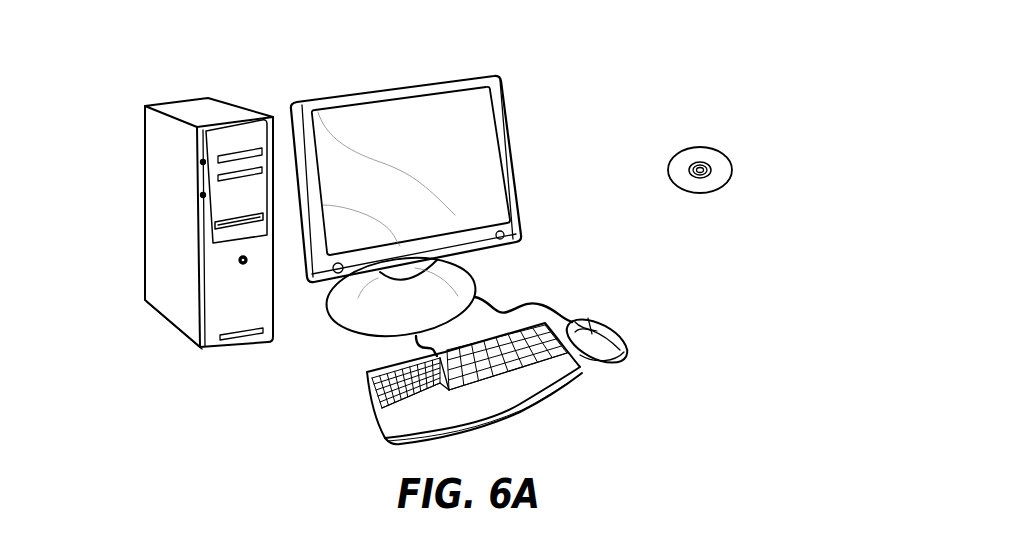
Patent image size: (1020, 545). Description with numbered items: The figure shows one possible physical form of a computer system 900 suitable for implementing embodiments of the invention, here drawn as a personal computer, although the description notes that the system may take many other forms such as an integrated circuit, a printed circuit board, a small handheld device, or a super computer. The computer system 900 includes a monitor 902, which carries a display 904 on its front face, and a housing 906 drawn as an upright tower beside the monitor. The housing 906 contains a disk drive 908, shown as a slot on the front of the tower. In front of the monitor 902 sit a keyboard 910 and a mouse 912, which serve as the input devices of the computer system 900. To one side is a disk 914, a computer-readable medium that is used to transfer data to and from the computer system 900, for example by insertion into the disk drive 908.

The computer system 900 is at (630, 58).
The monitor 902 is at (517, 177).
The display 904 is at (472, 117).
The housing 906 is at (195, 107).
The disk drive 908 is at (252, 218).
The keyboard 910 is at (372, 413).
The mouse 912 is at (617, 333).
The disk 914 is at (713, 147).